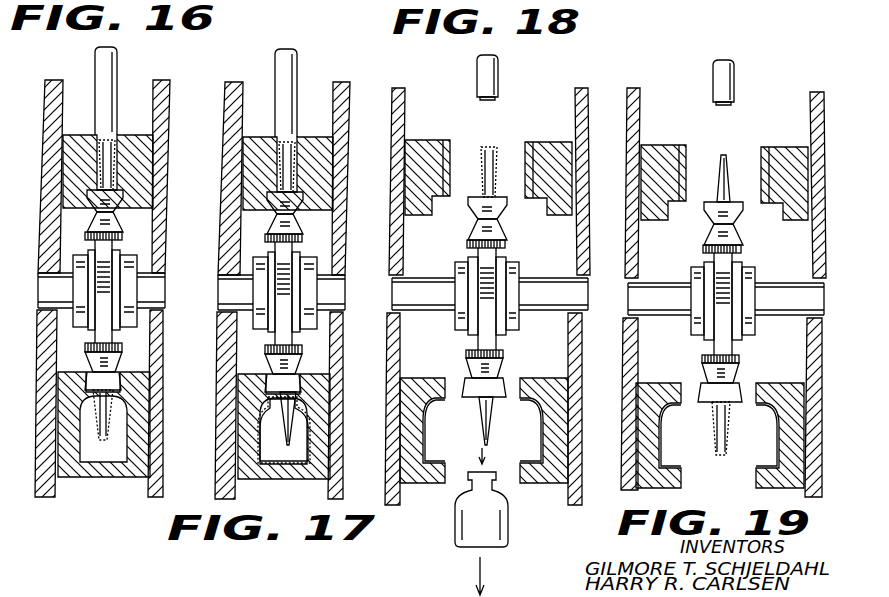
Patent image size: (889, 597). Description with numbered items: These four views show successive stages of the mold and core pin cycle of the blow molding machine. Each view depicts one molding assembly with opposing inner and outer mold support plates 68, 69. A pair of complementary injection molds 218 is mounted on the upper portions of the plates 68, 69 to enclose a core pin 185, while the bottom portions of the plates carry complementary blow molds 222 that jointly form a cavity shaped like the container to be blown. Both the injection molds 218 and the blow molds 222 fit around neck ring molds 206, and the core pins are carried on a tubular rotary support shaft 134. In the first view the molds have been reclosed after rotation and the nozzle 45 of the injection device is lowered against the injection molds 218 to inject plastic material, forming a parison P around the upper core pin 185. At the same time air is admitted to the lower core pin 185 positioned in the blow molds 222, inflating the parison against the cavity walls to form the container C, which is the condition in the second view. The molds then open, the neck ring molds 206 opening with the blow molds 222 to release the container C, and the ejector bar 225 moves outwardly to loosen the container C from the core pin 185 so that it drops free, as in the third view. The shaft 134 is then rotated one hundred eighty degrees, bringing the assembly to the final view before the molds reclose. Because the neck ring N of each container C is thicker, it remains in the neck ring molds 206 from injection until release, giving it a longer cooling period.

In FIG. 16, the nozzle 45 is at (113, 68).
In FIG. 17, the nozzle 45 is at (311, 91).
In FIG. 18, the nozzle 45 is at (488, 78).
In FIG. 19, the nozzle 45 is at (753, 82).
In FIG. 16, the inner mold support plate 68 is at (48, 218).
In FIG. 18, the inner mold support plate 68 is at (400, 187).
In FIG. 16, the outer mold support plate 69 is at (163, 203).
In FIG. 18, the outer mold support plate 69 is at (577, 405).
In FIG. 16, the tubular rotary support shaft 134 is at (153, 300).
In FIG. 17, the tubular rotary support shaft 134 is at (274, 293).
In FIG. 18, the tubular rotary support shaft 134 is at (420, 292).
In FIG. 19, the tubular rotary support shaft 134 is at (726, 310).
In FIG. 16, the core pin 185 is at (106, 409).
In FIG. 17, the core pin 185 is at (324, 409).
In FIG. 18, the core pin 185 is at (477, 413).
In FIG. 19, the core pin 185 is at (742, 161).
In FIG. 16, the neck ring mold 206 is at (115, 207).
In FIG. 17, the neck ring mold 206 is at (260, 217).
In FIG. 18, the neck ring mold 206 is at (495, 378).
In FIG. 19, the neck ring mold 206 is at (751, 235).
In FIG. 16, the injection mold 218 is at (72, 136).
In FIG. 17, the injection mold 218 is at (275, 158).
In FIG. 18, the injection mold 218 is at (425, 148).
In FIG. 19, the injection mold 218 is at (710, 152).
In FIG. 16, the blow mold 222 is at (76, 478).
In FIG. 17, the blow mold 222 is at (255, 426).
In FIG. 18, the blow mold 222 is at (432, 485).
In FIG. 19, the blow mold 222 is at (720, 446).
In FIG. 16, the ejector bar 225 is at (122, 348).
In FIG. 17, the ejector bar 225 is at (260, 359).
In FIG. 18, the ejector bar 225 is at (506, 244).
In FIG. 19, the ejector bar 225 is at (748, 365).
In FIG. 16, the parison P is at (104, 442).
In FIG. 17, the parison P is at (301, 143).
In FIG. 18, the parison P is at (493, 150).
In FIG. 19, the parison P is at (729, 440).
In FIG. 17, the container C is at (282, 449).
In FIG. 18, the container C is at (497, 520).
In FIG. 18, the neck ring N is at (495, 483).